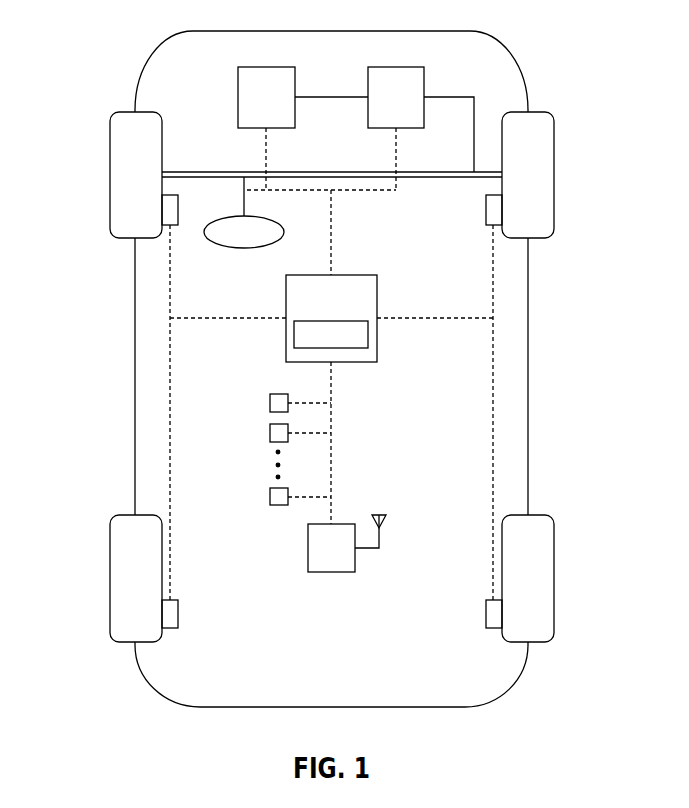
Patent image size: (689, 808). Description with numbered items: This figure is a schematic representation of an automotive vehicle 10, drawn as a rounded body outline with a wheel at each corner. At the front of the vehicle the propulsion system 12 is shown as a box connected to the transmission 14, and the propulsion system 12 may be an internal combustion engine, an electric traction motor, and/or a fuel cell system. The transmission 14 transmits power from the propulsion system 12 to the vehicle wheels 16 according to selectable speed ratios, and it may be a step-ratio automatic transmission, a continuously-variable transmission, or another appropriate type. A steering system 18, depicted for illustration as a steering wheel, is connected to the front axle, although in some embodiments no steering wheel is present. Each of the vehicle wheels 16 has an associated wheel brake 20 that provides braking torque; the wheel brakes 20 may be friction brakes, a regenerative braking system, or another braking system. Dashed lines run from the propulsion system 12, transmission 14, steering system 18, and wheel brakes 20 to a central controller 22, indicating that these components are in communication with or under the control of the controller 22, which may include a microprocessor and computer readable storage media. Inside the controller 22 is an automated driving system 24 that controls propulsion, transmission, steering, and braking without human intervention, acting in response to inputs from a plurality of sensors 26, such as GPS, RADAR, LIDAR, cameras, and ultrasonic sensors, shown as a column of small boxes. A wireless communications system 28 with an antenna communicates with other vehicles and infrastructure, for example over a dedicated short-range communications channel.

The automotive vehicle 10 is at (562, 85).
The propulsion system 12 is at (238, 96).
The transmission 14 is at (424, 82).
The vehicle wheels 16 is at (110, 175).
The steering system 18 is at (244, 248).
The wheel brakes 20 is at (178, 208).
The controller 22 is at (377, 330).
The automated driving system 24 is at (355, 348).
The sensors 26 is at (270, 403).
The wireless communications system 28 is at (333, 572).